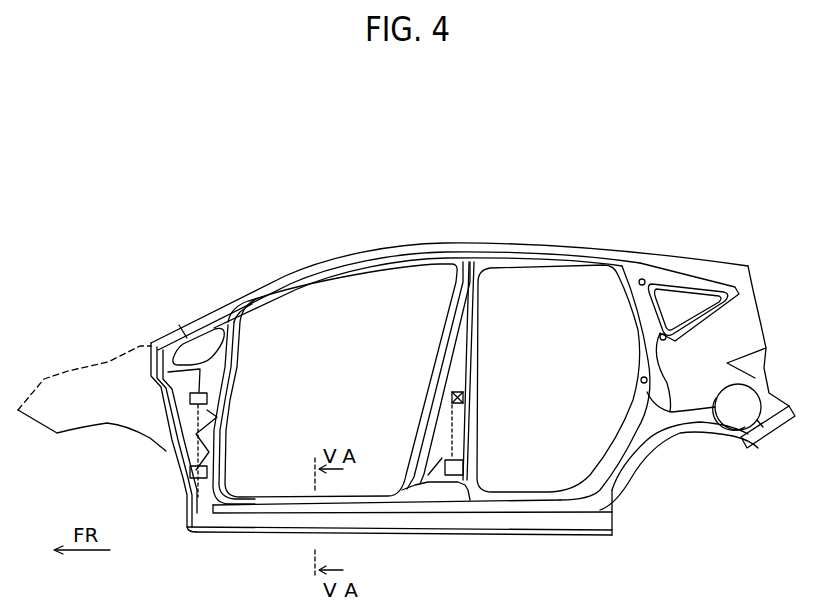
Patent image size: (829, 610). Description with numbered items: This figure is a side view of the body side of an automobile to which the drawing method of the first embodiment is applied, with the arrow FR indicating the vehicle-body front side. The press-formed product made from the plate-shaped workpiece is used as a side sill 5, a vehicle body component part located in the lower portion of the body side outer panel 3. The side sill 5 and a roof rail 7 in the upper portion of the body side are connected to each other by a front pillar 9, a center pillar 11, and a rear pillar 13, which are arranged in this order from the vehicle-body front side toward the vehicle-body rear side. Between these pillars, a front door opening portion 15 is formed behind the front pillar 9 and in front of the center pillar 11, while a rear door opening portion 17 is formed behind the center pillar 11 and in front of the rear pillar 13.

The body side outer panel 3 is at (432, 242).
The side sill 5 is at (253, 520).
The roof rail 7 is at (535, 247).
The front pillar 9 is at (213, 378).
The center pillar 11 is at (445, 346).
The rear pillar 13 is at (640, 326).
The front door opening portion 15 is at (338, 399).
The rear door opening portion 17 is at (546, 355).